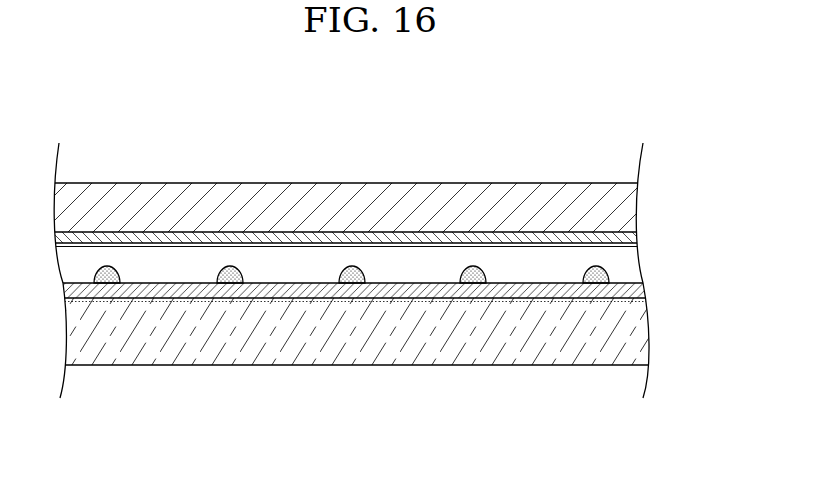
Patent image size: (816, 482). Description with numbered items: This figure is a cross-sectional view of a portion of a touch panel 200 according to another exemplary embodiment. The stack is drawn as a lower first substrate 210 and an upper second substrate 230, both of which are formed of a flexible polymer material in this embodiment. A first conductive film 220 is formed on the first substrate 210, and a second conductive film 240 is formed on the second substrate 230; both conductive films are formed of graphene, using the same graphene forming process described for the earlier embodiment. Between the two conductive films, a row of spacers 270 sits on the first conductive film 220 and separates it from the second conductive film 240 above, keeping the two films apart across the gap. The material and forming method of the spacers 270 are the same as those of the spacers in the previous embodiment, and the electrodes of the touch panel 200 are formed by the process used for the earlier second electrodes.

The touch panel 200 is at (604, 122).
The first substrate 210 is at (645, 338).
The first conductive film 220 is at (643, 290).
The second substrate 230 is at (630, 198).
The second conductive film 240 is at (632, 238).
The spacers 270 is at (350, 281).